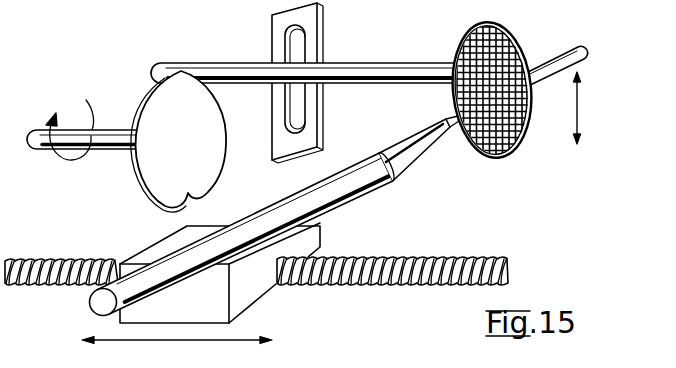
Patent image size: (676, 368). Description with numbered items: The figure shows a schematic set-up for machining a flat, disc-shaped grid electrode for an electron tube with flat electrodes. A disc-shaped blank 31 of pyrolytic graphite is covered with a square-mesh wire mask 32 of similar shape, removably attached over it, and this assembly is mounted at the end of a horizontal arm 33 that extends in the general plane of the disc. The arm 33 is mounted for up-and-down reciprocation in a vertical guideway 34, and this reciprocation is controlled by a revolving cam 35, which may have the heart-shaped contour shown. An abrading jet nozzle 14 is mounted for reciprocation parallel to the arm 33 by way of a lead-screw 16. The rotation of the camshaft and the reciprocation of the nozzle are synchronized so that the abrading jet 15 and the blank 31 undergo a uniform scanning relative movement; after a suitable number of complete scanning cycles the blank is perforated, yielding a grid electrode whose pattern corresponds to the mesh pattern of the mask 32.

The abrading jet nozzle 14 is at (357, 163).
The abrading jet 15 is at (447, 121).
The lead-screw 16 is at (40, 286).
The disc-shaped blank 31 is at (533, 99).
The square-mesh wire mask 32 is at (512, 38).
The horizontal arm 33 is at (394, 65).
The vertical guideway 34 is at (311, 36).
The revolving cam 35 is at (137, 181).